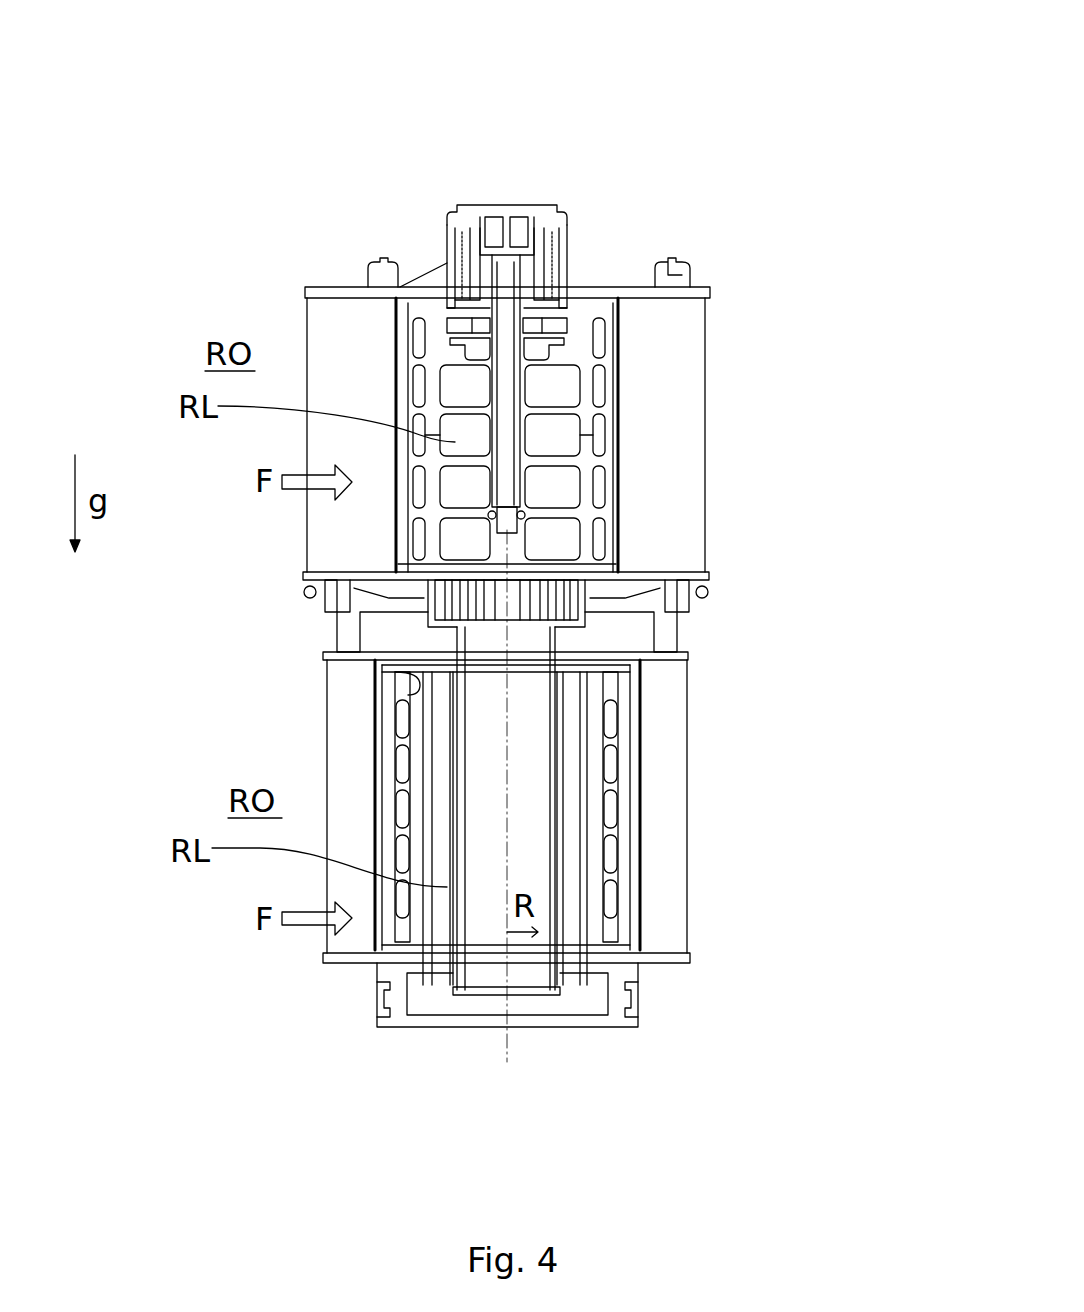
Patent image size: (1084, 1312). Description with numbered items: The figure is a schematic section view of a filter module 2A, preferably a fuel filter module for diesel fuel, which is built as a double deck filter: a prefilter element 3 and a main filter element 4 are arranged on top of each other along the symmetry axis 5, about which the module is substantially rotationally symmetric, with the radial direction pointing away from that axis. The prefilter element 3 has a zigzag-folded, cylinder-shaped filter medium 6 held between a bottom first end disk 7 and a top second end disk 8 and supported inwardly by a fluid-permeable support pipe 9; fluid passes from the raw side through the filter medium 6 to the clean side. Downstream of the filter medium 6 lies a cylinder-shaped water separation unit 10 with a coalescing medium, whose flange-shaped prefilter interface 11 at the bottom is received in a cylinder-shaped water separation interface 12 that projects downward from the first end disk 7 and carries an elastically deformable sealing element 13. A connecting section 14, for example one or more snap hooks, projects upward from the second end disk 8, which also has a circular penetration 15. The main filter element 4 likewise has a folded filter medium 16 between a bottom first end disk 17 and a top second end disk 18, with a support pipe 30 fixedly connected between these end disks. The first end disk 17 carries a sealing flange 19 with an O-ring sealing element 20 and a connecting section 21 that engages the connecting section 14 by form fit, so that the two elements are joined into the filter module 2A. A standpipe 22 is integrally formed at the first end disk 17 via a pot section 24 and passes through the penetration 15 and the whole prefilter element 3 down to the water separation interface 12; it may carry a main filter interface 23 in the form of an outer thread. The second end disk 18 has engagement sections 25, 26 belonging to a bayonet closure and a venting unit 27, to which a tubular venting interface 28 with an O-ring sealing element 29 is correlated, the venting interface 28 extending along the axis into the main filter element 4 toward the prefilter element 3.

The filter module 2A is at (495, 98).
The prefilter element 3 is at (692, 835).
The main filter element 4 is at (707, 429).
The symmetry axis 5 is at (508, 1057).
The filter medium 6 is at (670, 795).
The first end disk 7 is at (676, 968).
The second end disk 8 is at (695, 648).
The support pipe 9 is at (640, 887).
The water separation unit 10 is at (407, 808).
The prefilter interface 11 is at (435, 1015).
The water separation interface 12 is at (417, 1027).
The sealing element 13 is at (377, 1000).
The connecting section 14 is at (350, 617).
The penetration 15 is at (417, 673).
The filter medium 16 is at (677, 375).
The first end disk 17 is at (590, 566).
The second end disk 18 is at (620, 290).
The sealing flange 19 is at (710, 605).
The sealing element 20 is at (713, 592).
The connecting section 21 is at (338, 603).
The standpipe 22 is at (643, 653).
The main filter interface 23 is at (578, 982).
The pot section 24 is at (705, 592).
The engagement section 25 is at (665, 260).
The engagement section 26 is at (385, 268).
The venting unit 27 is at (530, 205).
The venting interface 28 is at (455, 385).
The sealing element 29 is at (555, 522).
The support pipe 30 is at (622, 332).